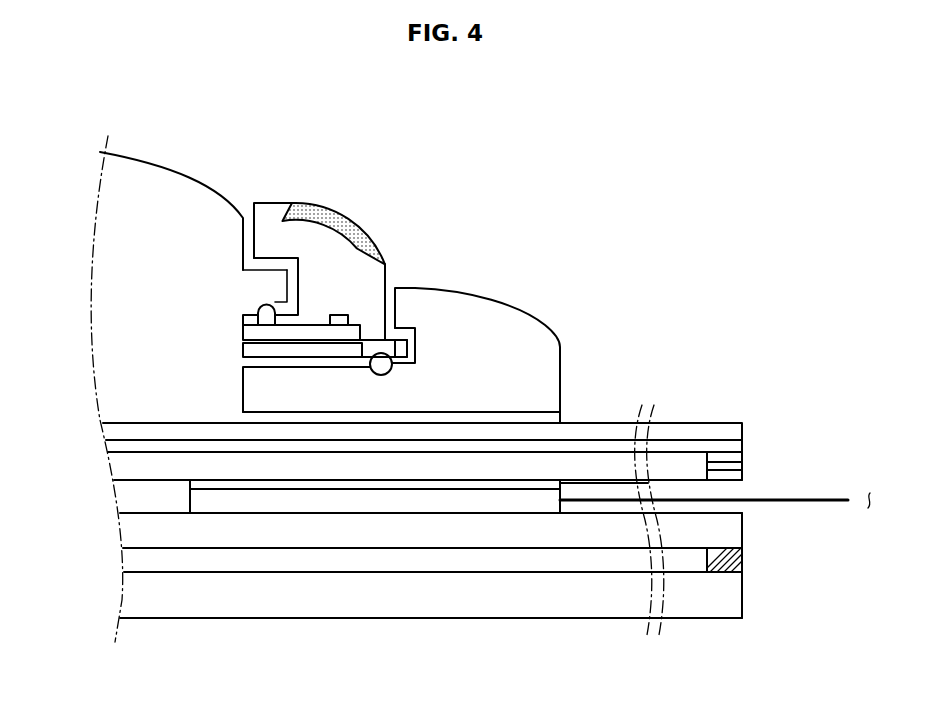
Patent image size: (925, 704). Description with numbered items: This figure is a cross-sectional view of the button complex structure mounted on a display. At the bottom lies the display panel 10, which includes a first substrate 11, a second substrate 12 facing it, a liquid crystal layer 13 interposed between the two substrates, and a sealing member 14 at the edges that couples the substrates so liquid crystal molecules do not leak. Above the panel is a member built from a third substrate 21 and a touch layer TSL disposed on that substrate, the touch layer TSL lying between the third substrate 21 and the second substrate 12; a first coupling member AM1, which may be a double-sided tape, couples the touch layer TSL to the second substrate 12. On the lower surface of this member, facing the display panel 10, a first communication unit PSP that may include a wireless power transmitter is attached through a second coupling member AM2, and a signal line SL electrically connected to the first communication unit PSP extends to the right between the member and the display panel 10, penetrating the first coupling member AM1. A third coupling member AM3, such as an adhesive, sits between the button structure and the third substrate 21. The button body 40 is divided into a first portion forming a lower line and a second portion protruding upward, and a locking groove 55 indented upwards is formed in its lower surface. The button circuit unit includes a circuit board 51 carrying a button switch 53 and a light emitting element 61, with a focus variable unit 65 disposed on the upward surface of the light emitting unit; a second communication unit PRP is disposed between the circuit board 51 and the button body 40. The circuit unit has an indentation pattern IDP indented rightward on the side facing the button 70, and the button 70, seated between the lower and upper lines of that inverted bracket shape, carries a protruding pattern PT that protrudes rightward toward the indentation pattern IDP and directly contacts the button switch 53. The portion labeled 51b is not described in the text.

The button 70 is at (148, 152).
The indentation pattern IDP is at (270, 259).
The protruding pattern PT is at (290, 278).
The holder side wall 51b is at (267, 217).
The focus variable unit 65 is at (335, 226).
The button switch 53 is at (265, 305).
The circuit board 51 is at (252, 333).
The second communication unit PRP is at (252, 350).
The light emitting element 61 is at (338, 316).
The locking groove 55 is at (394, 343).
The button body 40 is at (570, 328).
The third coupling member AM3 is at (553, 417).
The third substrate 21 is at (733, 432).
The touch layer TSL is at (737, 446).
The first coupling member AM1 is at (732, 467).
The signal line SL is at (850, 498).
The second coupling member AM2 is at (198, 483).
The first communication unit PSP is at (200, 502).
The second substrate 12 is at (728, 532).
The sealing member 14 is at (733, 560).
The liquid crystal layer 13 is at (690, 563).
The first substrate 11 is at (730, 602).
The display panel 10 is at (808, 525).